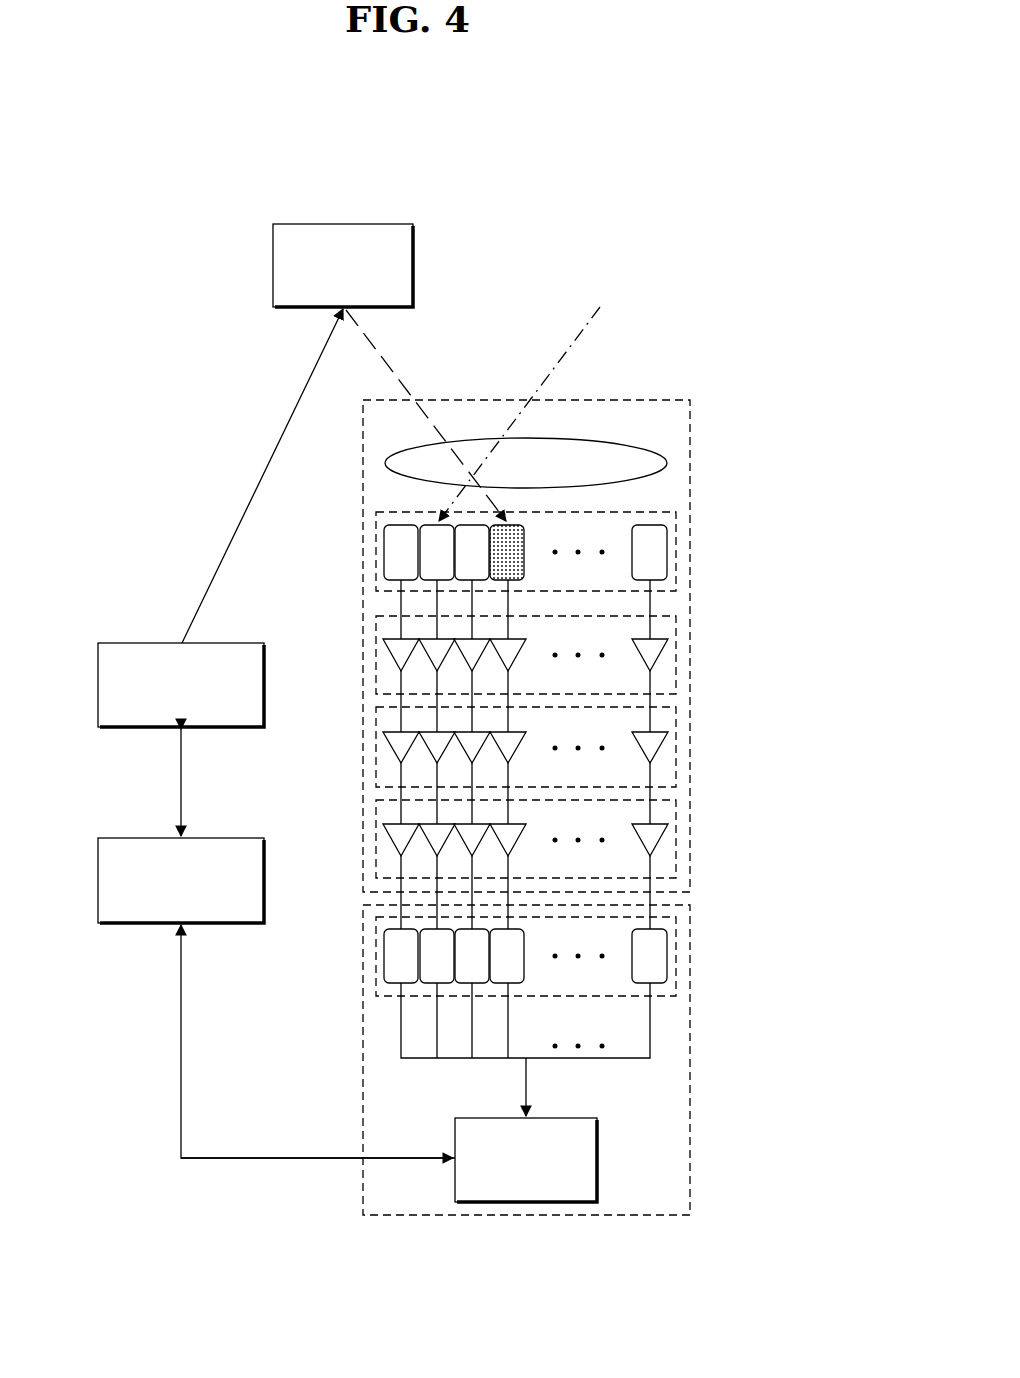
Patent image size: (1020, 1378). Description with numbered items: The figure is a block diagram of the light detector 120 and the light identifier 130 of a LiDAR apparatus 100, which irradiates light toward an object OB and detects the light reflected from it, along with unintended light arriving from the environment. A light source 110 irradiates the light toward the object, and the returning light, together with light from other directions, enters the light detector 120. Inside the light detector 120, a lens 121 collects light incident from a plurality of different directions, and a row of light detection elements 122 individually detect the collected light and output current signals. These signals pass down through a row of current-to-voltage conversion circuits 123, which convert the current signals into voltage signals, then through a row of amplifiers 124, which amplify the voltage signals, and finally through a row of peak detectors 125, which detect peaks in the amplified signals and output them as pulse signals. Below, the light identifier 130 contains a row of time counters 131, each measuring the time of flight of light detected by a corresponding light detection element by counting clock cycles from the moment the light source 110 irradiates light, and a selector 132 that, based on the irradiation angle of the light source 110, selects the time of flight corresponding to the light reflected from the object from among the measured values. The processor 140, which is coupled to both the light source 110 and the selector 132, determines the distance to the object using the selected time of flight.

The LiDAR apparatus 100 is at (688, 180).
The light source 110 is at (205, 643).
The light detector 120 is at (690, 463).
The lens 121 is at (600, 440).
The light detection elements 122 is at (676, 553).
The current-to-voltage conversion circuits 123 is at (676, 655).
The amplifiers 124 is at (676, 746).
The peak detectors 125 is at (676, 840).
The light identifier 130 is at (690, 1058).
The time counters 131 is at (676, 957).
The selector 132 is at (548, 1117).
The processor 140 is at (205, 838).